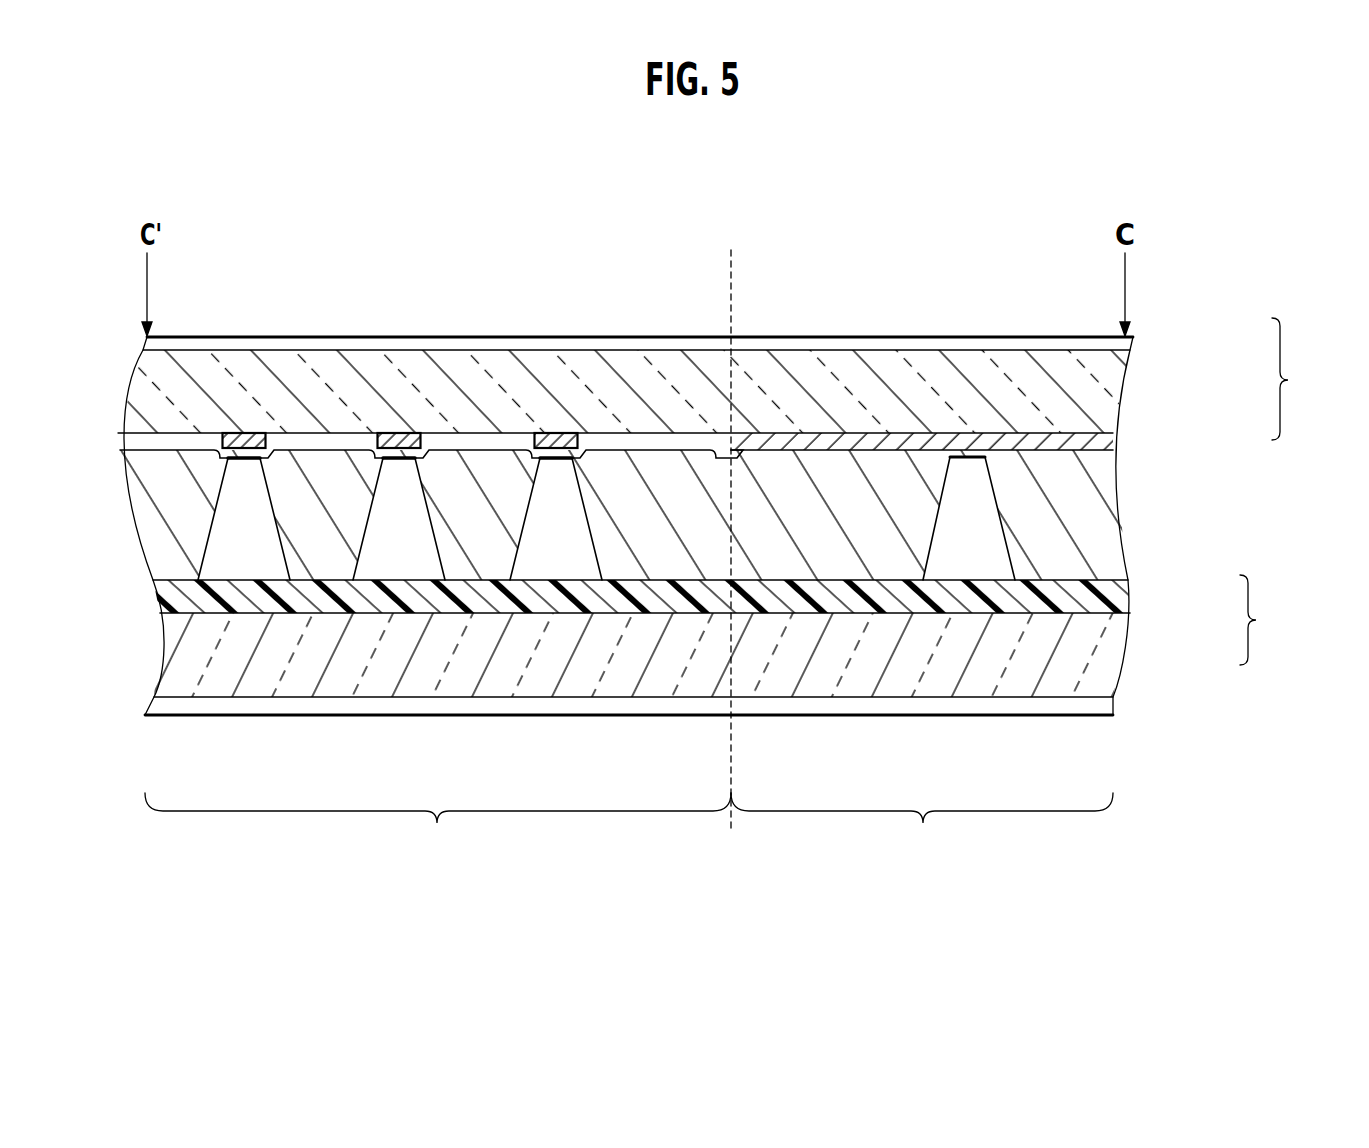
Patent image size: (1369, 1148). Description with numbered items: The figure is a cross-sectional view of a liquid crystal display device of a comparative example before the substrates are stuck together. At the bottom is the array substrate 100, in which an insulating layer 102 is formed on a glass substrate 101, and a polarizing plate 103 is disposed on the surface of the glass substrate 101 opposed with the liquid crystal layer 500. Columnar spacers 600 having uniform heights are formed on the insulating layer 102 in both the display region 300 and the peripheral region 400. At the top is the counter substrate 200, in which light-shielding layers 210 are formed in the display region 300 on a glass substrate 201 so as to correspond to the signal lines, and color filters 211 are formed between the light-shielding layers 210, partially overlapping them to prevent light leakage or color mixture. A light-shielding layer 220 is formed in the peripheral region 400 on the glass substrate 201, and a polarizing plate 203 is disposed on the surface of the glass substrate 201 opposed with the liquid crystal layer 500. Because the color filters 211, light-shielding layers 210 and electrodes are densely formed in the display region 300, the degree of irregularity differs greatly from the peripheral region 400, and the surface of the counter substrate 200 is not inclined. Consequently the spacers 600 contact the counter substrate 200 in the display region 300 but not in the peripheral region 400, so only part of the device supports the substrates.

The array substrate 100 is at (726, 634).
The glass substrate 101 is at (1125, 648).
The insulating layer 102 is at (1125, 591).
The polarizing plate 103 is at (1125, 700).
The counter substrate 200 is at (726, 381).
The glass substrate 201 is at (1120, 388).
The polarizing plate 203 is at (1135, 337).
The light-shielding layers 210 is at (247, 433).
The color filters 211 is at (187, 440).
The light-shielding layer 220 is at (1115, 438).
The display region 300 is at (438, 557).
The peripheral region 400 is at (922, 828).
The liquid crystal layer 500 is at (1120, 485).
The columnar spacers 600 is at (982, 543).